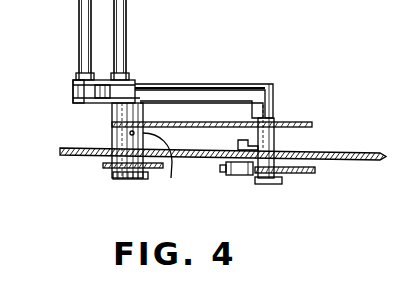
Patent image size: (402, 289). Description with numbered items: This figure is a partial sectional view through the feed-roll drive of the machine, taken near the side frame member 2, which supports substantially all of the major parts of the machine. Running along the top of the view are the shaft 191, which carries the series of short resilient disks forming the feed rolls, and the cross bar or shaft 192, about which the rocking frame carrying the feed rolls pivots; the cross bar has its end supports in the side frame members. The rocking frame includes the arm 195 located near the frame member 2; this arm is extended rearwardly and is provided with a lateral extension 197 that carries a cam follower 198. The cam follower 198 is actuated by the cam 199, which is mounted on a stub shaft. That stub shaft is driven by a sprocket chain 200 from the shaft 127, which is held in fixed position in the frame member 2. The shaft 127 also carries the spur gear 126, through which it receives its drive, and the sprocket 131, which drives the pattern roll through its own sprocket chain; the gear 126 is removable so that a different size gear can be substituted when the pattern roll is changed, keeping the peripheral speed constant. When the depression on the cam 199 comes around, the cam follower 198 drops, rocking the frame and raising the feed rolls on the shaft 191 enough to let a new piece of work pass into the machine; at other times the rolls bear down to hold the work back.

The shaft 191 is at (80, 21).
The cross bar or shaft 192 is at (125, 23).
The arm 195 is at (162, 90).
The sprocket chain 200 is at (200, 122).
The lateral extension 197 is at (240, 143).
The side frame member 2 is at (341, 153).
The sprocket 131 is at (103, 166).
The spur gear 126 is at (116, 180).
The shaft 127 is at (150, 172).
The cam follower 198 is at (240, 175).
The cam 199 is at (298, 175).